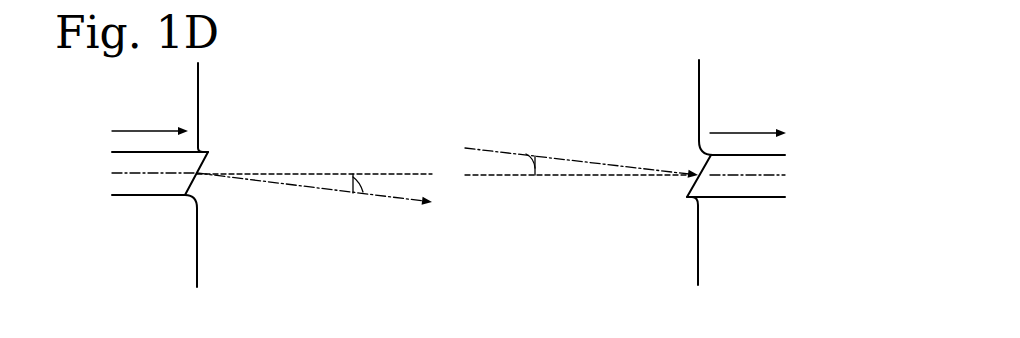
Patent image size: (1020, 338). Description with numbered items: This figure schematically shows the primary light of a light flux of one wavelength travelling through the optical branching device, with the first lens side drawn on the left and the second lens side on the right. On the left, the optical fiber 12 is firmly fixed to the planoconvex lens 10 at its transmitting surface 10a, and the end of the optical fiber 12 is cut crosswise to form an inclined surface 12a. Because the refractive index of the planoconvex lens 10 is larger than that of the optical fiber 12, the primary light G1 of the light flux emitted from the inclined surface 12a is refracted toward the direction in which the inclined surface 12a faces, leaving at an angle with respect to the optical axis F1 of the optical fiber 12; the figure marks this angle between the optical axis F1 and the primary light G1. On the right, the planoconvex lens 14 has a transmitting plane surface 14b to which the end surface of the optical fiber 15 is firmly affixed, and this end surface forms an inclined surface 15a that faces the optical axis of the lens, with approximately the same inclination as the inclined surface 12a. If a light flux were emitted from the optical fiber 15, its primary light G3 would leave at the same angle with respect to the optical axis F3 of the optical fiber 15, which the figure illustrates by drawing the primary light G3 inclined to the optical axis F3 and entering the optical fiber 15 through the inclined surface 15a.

The planoconvex lens 10 is at (190, 252).
The end face of first optical fiber 10a is at (199, 110).
The optical fiber 12 is at (176, 162).
The inclined surface 12a is at (212, 157).
The planoconvex lens 14 is at (703, 237).
The transmitting plane surface 14b is at (698, 103).
The optical fiber 15 is at (729, 161).
The inclined surface 15a is at (702, 160).
The optical axis F1 is at (402, 172).
The optical axis F3 is at (495, 178).
The primary light G1 is at (305, 193).
The primary light G3 is at (577, 160).